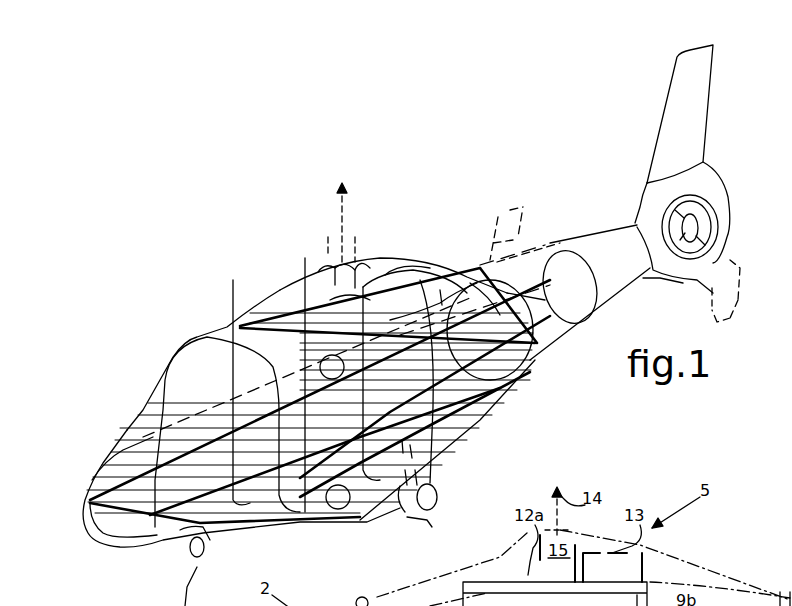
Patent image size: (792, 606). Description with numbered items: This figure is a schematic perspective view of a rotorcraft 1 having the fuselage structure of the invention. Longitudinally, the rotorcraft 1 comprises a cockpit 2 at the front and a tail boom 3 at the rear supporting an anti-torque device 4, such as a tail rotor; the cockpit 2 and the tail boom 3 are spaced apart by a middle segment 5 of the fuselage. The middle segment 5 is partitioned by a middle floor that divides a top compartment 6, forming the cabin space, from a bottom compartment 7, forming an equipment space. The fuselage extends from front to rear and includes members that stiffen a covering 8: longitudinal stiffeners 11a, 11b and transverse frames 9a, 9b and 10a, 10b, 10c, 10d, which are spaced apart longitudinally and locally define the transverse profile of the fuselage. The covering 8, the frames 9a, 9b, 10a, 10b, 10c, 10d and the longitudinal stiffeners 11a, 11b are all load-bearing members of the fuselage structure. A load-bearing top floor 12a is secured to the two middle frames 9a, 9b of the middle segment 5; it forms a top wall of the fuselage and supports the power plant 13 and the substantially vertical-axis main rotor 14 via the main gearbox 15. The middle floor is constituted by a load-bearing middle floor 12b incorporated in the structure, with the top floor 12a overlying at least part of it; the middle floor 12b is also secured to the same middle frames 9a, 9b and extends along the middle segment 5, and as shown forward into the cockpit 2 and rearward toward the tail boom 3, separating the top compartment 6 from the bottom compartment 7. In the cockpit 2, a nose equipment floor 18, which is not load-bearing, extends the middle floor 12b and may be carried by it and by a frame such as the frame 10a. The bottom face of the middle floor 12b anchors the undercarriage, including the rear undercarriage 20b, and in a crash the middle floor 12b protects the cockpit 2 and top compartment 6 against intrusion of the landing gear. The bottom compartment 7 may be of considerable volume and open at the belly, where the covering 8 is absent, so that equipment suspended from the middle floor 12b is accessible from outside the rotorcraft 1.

The rotorcraft 1 is at (245, 210).
The cockpit 2 is at (148, 385).
The tail boom 3 is at (572, 208).
The anti-torque device 4 is at (715, 216).
The middle segment 5 is at (382, 247).
The top compartment 6 is at (332, 367).
The bottom compartment 7 is at (338, 497).
The covering 8 is at (227, 330).
The middle frame 9a is at (370, 510).
The middle frame 9b is at (447, 457).
The transverse frame 10a is at (123, 450).
The transverse frame 10b is at (140, 407).
The transverse frame 10c is at (540, 363).
The transverse frame 10d is at (585, 268).
The longitudinal stiffener 11a is at (210, 410).
The longitudinal stiffener 11b is at (473, 382).
The top floor 12a is at (268, 304).
The middle floor 12b is at (443, 417).
The power plant 13 is at (397, 260).
The main rotor 14 is at (342, 205).
The main gearbox 15 is at (318, 275).
The nose equipment floor 18 is at (90, 543).
The rear undercarriage 20b is at (410, 518).